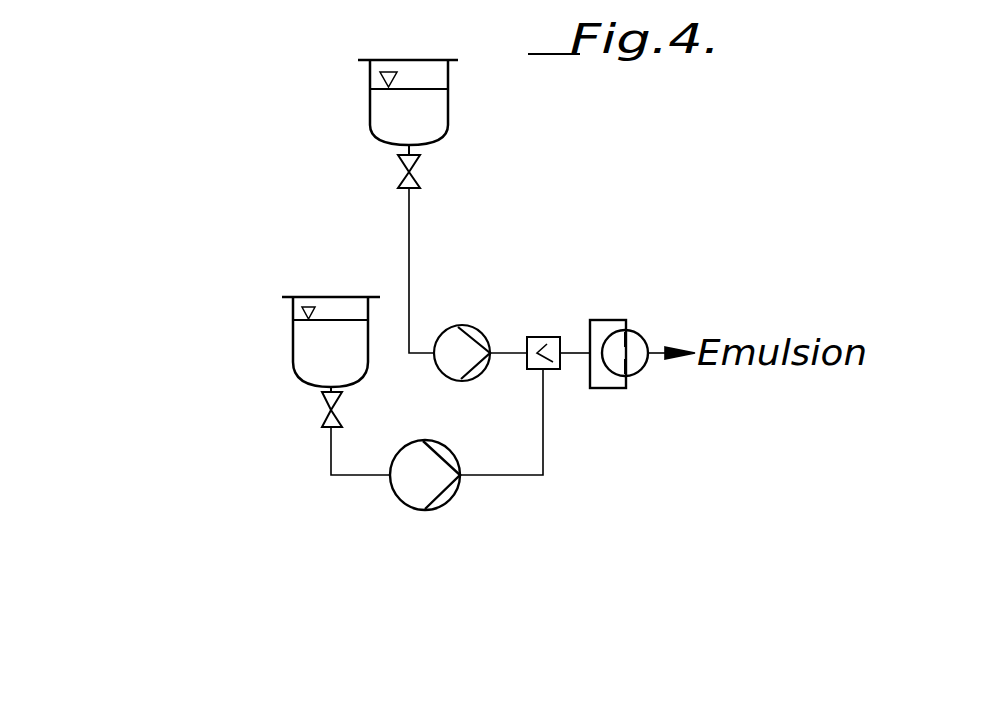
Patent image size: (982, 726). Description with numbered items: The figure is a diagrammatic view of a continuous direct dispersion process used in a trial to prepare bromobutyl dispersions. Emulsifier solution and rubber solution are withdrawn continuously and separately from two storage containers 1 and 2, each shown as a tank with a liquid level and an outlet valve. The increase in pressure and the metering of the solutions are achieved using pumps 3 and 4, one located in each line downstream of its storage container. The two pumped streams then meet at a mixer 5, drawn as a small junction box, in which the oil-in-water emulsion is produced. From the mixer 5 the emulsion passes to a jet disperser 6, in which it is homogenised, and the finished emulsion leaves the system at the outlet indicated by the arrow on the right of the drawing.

The storage container 1 is at (388, 100).
The storage container 2 is at (313, 342).
The pump 3 is at (450, 338).
The pump 4 is at (418, 485).
The mixer 5 is at (553, 358).
The jet disperser 6 is at (600, 327).